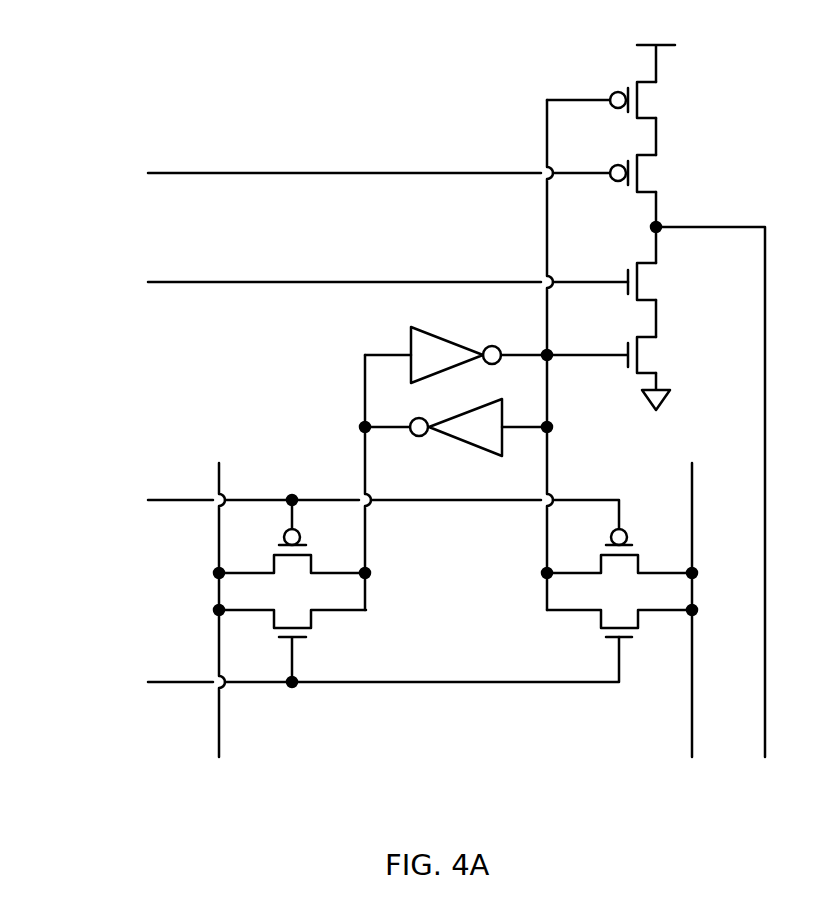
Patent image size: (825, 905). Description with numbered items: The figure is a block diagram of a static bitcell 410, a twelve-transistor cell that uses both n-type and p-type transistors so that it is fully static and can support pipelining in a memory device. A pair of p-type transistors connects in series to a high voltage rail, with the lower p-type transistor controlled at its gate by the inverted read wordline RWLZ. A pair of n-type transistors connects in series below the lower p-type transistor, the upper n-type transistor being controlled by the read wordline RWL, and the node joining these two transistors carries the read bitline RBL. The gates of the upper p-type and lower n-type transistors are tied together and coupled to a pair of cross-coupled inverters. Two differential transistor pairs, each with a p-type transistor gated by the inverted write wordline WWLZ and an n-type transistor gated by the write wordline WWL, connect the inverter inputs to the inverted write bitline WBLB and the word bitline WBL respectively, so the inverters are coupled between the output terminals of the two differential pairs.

The bitcell 410 is at (198, 37).
The inverted read wordline RWLZ is at (379, 160).
The read wordline RWL is at (388, 270).
The inverted write wordline WWLZ is at (383, 513).
The write wordline WWL is at (383, 674).
The word bitline WBL is at (196, 610).
The inverted write bitline WBLB is at (662, 610).
The read bitline RBL is at (710, 492).